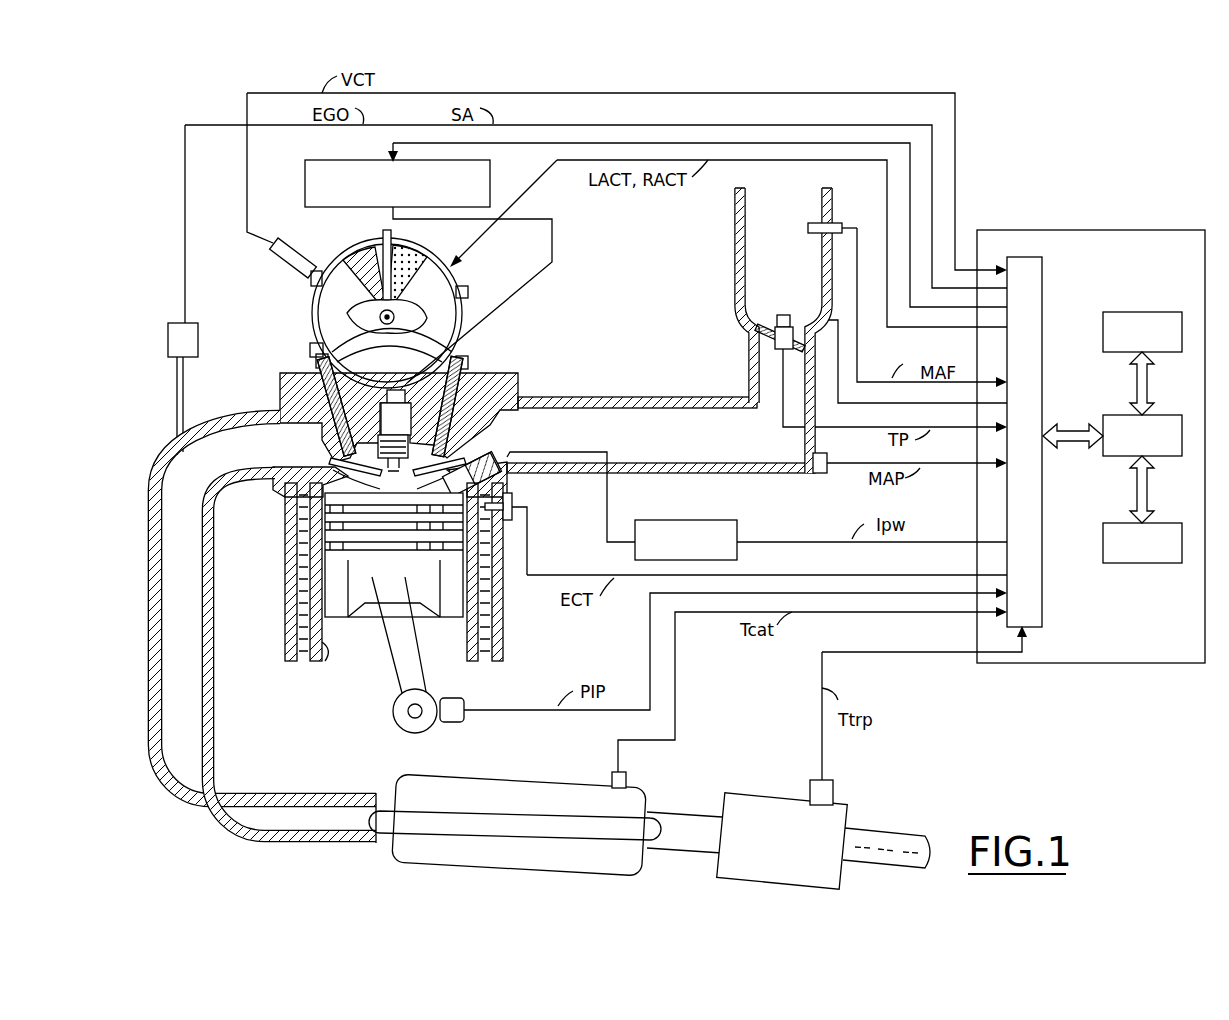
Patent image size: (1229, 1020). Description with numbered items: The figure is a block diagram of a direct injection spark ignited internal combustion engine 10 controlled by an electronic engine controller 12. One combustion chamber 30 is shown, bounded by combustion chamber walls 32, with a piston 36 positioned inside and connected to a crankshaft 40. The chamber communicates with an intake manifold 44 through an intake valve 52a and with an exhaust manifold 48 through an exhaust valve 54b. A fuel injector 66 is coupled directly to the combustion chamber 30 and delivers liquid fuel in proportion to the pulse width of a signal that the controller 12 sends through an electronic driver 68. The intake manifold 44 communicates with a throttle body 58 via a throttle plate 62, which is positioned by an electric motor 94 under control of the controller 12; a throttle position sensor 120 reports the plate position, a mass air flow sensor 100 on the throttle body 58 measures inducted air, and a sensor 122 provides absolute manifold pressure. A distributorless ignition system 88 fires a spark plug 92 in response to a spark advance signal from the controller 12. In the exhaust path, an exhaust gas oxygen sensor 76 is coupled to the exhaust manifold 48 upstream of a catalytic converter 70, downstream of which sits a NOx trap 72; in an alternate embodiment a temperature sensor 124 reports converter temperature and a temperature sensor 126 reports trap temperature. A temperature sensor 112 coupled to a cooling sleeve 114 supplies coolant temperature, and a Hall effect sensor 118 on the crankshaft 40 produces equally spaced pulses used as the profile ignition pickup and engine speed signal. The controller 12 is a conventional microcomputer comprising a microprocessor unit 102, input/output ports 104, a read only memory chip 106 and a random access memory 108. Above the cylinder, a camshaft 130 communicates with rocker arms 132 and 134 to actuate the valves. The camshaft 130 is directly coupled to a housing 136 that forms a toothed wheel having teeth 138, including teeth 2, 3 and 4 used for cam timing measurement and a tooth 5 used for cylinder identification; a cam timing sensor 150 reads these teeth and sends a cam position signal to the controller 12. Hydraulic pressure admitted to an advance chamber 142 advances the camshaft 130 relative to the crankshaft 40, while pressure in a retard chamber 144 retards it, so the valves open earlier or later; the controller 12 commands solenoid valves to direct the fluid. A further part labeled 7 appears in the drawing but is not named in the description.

The tooth 2 is at (467, 294).
The tooth 3 is at (468, 378).
The tooth 4 is at (310, 347).
The tooth 5 is at (310, 281).
The camshaft vane 7 is at (384, 240).
The direct injection spark ignited internal combustion engine 10 is at (550, 291).
The electronic engine controller 12 is at (1090, 230).
The combustion chamber 30 is at (367, 488).
The combustion chamber walls 32 is at (330, 656).
The piston 36 is at (383, 622).
The crankshaft 40 is at (393, 714).
The intake manifold 44 is at (684, 439).
The exhaust manifold 48 is at (183, 465).
The intake valve 52a is at (543, 398).
The exhaust valve 54b is at (333, 452).
The throttle body 58 is at (768, 372).
The throttle plate 62 is at (766, 313).
The fuel injector 66 is at (500, 457).
The electronic driver 68 is at (703, 520).
The catalytic converter 70 is at (503, 779).
The NOx trap 72 is at (763, 799).
The exhaust gas oxygen sensor 76 is at (167, 334).
The distributorless ignition system 88 is at (318, 161).
The spark plug 92 is at (386, 393).
The electric motor 94 is at (796, 316).
The mass air flow sensor 100 is at (812, 222).
The microprocessor unit 102 is at (1112, 414).
The input/output ports 104 is at (1045, 274).
The read only memory chip 106 is at (1140, 310).
The random access memory 108 is at (1152, 563).
The temperature sensor 112 is at (512, 505).
The cooling sleeve 114 is at (505, 636).
The Hall effect sensor 118 is at (464, 698).
The throttle position sensor 120 is at (767, 345).
The manifold pressure sensor 122 is at (833, 441).
The temperature sensor 124 is at (627, 778).
The temperature sensor 126 is at (837, 788).
The camshaft 130 is at (343, 307).
The rocker arm 132 is at (317, 360).
The rocker arm 134 is at (463, 350).
The housing 136 is at (437, 265).
The teeth 138 is at (466, 285).
The advance chamber 142 is at (470, 263).
The retard chamber 144 is at (357, 260).
The cam timing sensor 150 is at (272, 254).